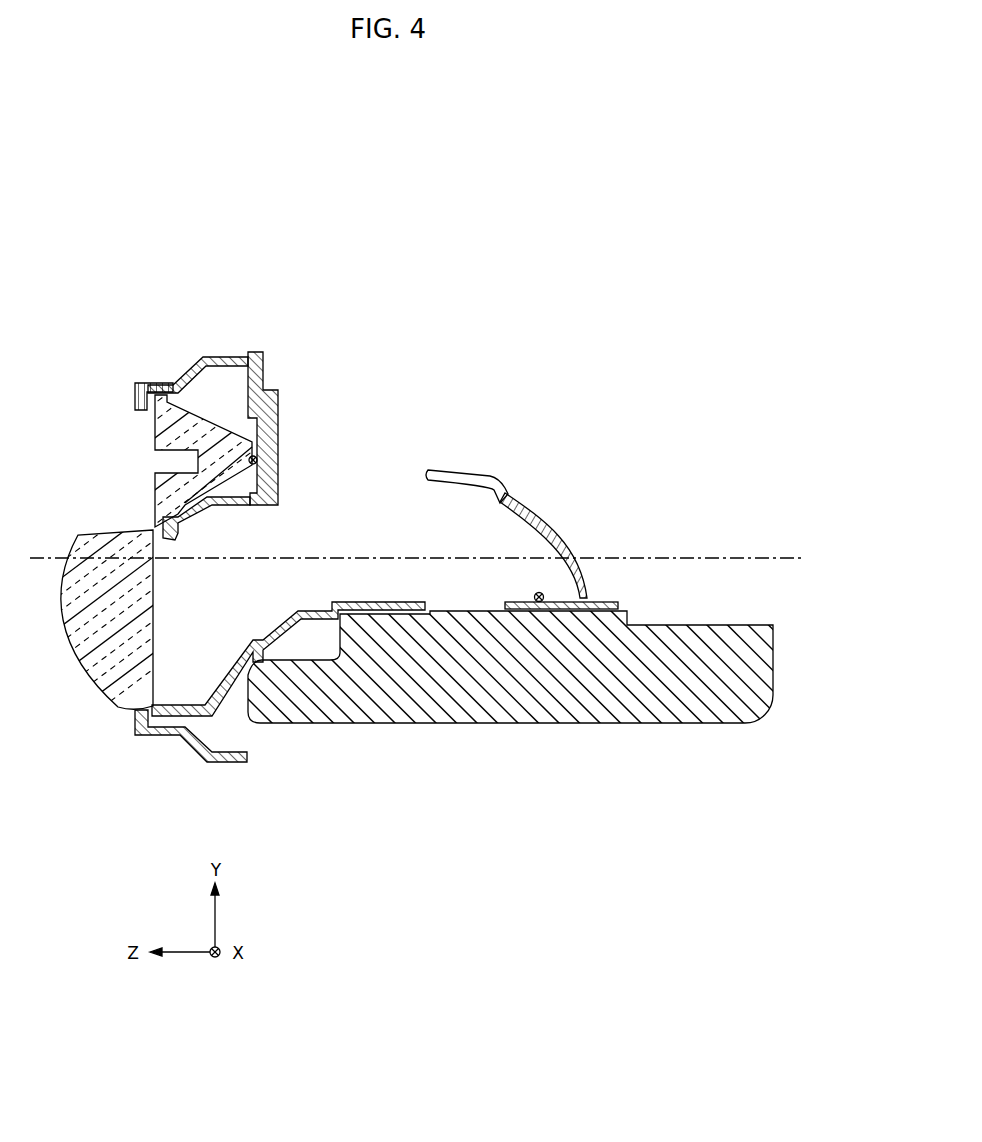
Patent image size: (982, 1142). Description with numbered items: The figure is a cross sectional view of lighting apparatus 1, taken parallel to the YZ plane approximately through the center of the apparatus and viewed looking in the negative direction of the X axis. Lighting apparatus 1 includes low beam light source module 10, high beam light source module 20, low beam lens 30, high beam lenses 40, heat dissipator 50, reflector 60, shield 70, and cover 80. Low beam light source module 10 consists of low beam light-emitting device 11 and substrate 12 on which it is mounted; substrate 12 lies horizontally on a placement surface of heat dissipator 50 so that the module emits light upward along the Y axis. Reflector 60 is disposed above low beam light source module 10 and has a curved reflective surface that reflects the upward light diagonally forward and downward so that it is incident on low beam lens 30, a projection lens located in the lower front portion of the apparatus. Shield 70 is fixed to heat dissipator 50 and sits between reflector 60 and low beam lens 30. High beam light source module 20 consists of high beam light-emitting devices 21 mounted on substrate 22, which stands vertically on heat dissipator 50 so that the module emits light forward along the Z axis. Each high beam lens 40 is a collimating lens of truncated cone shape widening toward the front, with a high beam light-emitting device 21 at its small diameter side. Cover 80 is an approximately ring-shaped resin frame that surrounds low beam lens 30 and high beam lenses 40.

The lighting apparatus 1 is at (644, 351).
The low beam light source module 10 is at (577, 519).
The low beam light-emitting device 11 is at (537, 593).
The substrate 12 is at (553, 603).
The high beam light source module 20 is at (213, 399).
The high beam light-emitting device 21 is at (250, 456).
The substrate 22 is at (258, 437).
The low beam lens 30 is at (103, 640).
The high beam lens 40 is at (176, 430).
The heat dissipator 50 is at (565, 690).
The reflector 60 is at (457, 478).
The shield 70 is at (314, 606).
The cover 80 is at (158, 388).